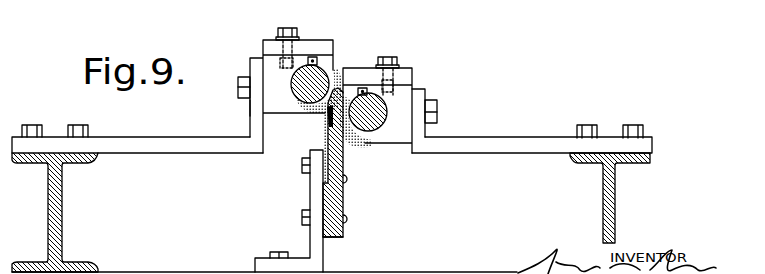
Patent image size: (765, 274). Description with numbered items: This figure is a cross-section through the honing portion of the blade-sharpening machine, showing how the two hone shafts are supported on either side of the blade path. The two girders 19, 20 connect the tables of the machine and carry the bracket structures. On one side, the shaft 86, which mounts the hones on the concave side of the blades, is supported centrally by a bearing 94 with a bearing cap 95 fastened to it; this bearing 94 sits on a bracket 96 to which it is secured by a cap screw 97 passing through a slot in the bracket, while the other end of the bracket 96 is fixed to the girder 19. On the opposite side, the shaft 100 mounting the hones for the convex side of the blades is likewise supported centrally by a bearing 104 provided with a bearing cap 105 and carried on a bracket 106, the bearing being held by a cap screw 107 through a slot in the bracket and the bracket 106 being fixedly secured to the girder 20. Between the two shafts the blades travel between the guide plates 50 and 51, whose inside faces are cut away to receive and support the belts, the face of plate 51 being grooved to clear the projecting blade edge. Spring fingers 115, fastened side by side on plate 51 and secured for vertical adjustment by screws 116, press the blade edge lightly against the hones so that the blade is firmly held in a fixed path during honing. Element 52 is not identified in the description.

The girder 19 is at (603, 198).
The girder 20 is at (62, 205).
The guide plate 50 is at (327, 240).
The guide plate 51 is at (340, 238).
The bracket 52 is at (310, 192).
The shaft 86 is at (383, 134).
The bearing 94 is at (416, 90).
The bearing cap 95 is at (363, 68).
The bracket 96 is at (513, 137).
The cap screw 97 is at (436, 108).
The shaft 100 is at (322, 67).
The bearing 104 is at (271, 86).
The bearing cap 105 is at (306, 40).
The bracket 106 is at (250, 108).
The cap screw 107 is at (240, 77).
The spring finger 115 is at (344, 160).
The screw 116 is at (344, 218).